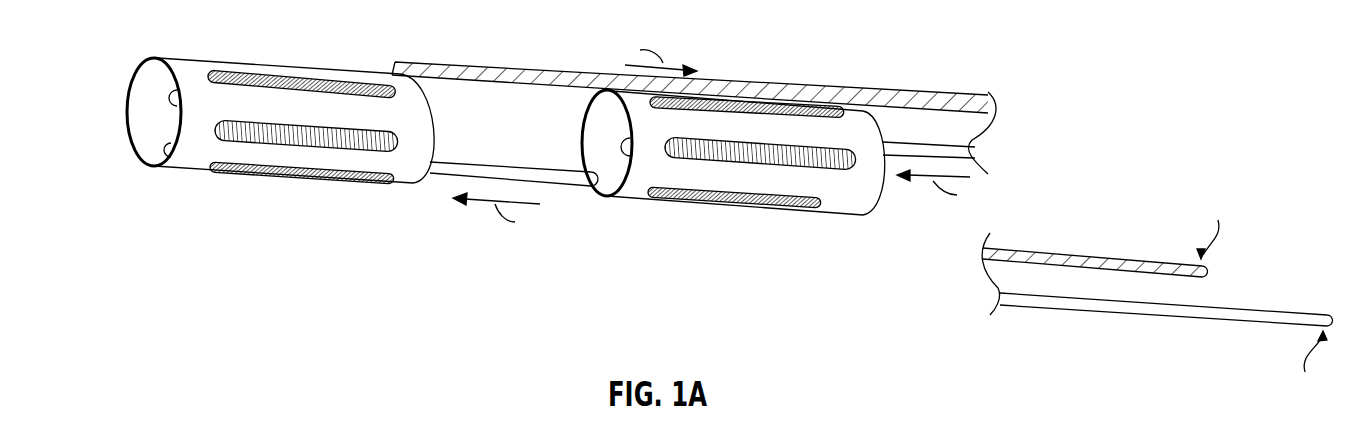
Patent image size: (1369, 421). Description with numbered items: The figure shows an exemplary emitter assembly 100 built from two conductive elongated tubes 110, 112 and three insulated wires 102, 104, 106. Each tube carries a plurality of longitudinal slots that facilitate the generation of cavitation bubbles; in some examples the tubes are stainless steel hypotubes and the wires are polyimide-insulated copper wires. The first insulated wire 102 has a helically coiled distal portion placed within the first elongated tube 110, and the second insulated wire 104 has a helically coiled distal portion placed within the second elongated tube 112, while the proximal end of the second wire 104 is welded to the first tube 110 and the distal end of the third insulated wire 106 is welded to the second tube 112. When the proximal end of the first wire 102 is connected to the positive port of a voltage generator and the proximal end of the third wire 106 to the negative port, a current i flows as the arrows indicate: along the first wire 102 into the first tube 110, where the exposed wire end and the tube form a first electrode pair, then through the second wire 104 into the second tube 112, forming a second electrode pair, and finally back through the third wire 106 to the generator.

The emitter assembly 100 is at (1266, 64).
The first insulated wire 102 is at (997, 127).
The second insulated wire 104 is at (508, 164).
The third insulated wire 106 is at (493, 82).
The first elongated tube 110 is at (803, 214).
The second elongated tube 112 is at (330, 184).